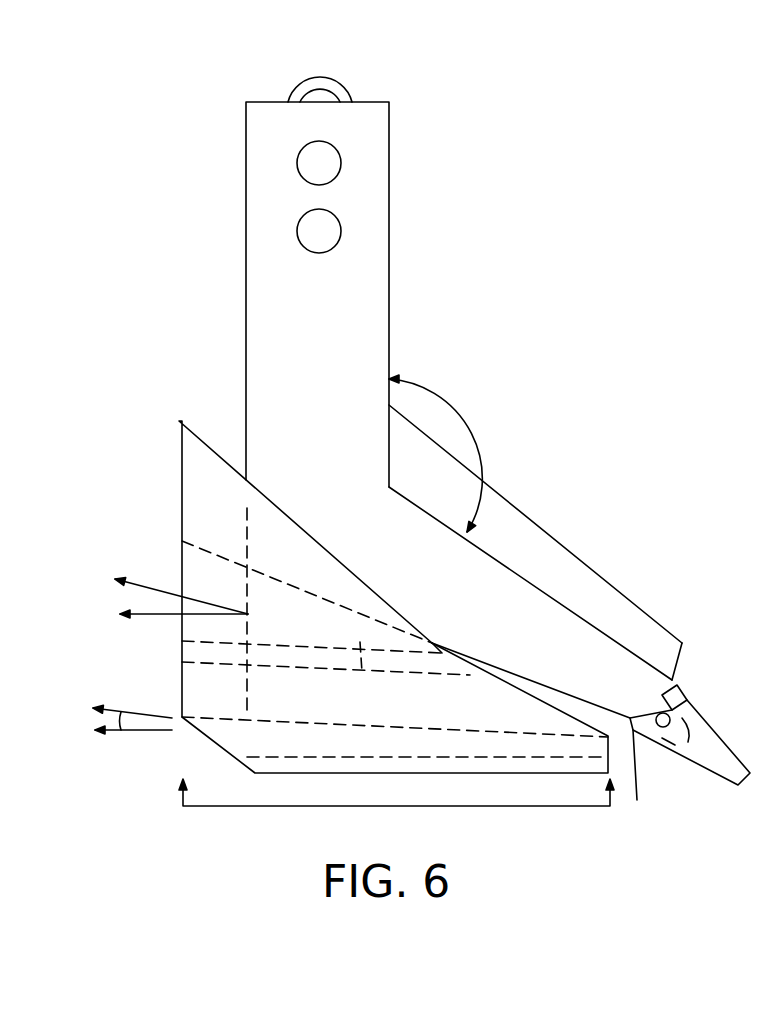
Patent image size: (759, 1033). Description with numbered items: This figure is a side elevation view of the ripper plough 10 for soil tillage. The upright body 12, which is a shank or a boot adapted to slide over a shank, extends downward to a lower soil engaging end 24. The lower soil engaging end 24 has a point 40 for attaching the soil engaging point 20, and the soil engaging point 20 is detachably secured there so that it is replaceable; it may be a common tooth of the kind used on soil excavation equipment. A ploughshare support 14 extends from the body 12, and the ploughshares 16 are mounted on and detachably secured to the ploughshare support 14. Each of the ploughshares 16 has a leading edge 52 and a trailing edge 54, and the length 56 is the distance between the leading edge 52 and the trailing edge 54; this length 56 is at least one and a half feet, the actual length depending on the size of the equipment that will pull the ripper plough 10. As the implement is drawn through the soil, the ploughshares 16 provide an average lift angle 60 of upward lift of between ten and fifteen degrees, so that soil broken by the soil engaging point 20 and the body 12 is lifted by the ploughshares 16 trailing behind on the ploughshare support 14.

The ripper plough 10 is at (218, 130).
The body 12 is at (246, 253).
The ploughshare support 14 is at (458, 652).
The ploughshares 16 is at (498, 680).
The soil engaging point 20 is at (706, 772).
The lower soil engaging end 24 is at (632, 718).
The point 40 is at (687, 694).
The leading edge 52 is at (628, 723).
The trailing edge 54 is at (182, 697).
The length 56 is at (383, 806).
The average lift angle 60 is at (143, 612).